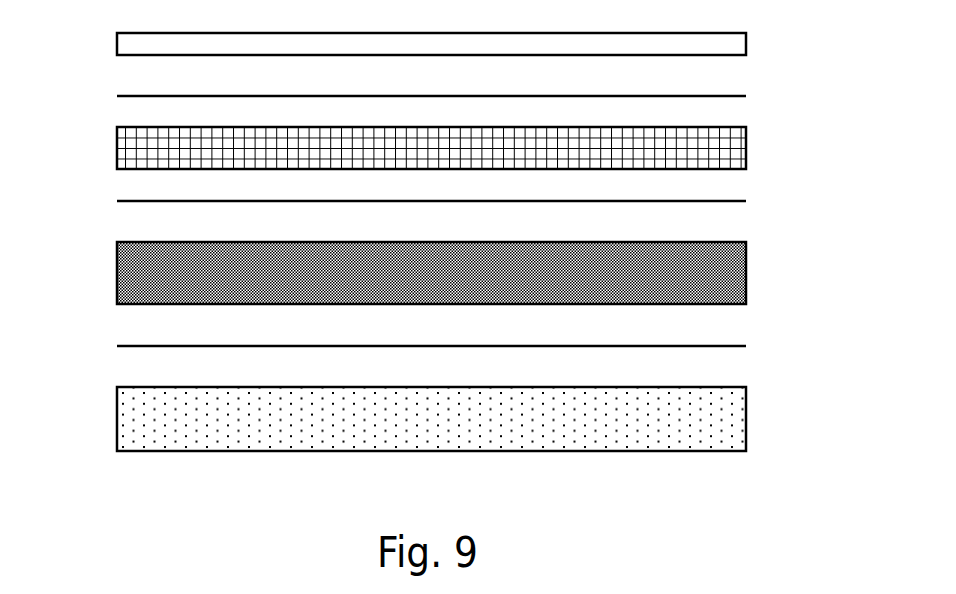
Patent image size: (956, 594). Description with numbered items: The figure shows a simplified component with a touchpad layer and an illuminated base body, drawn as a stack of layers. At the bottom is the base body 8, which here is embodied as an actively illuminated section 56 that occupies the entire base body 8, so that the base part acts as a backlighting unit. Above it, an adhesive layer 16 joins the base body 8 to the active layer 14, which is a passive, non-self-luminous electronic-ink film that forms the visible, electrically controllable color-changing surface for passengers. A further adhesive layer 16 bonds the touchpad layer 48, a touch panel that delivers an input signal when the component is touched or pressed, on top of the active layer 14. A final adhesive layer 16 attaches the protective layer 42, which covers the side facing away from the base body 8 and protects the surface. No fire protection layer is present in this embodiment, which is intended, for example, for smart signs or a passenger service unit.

The protective layer 42 is at (746, 43).
The adhesive layer 16 is at (746, 96).
The touchpad layer 48 is at (746, 148).
The active layer 14 is at (746, 273).
The base body 8 is at (481, 419).
The illuminated section 56 is at (746, 421).